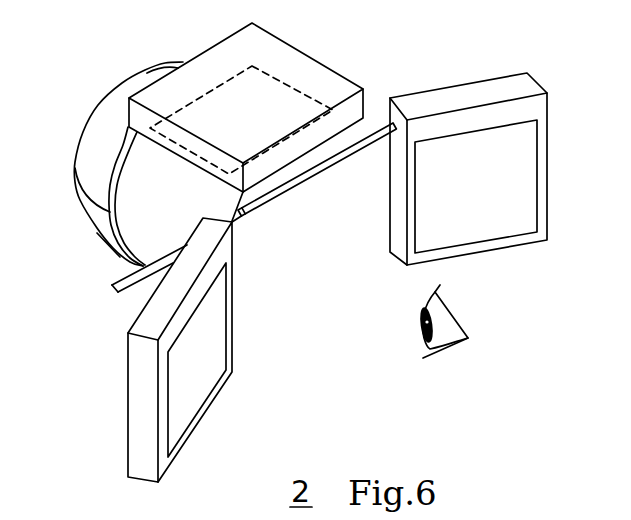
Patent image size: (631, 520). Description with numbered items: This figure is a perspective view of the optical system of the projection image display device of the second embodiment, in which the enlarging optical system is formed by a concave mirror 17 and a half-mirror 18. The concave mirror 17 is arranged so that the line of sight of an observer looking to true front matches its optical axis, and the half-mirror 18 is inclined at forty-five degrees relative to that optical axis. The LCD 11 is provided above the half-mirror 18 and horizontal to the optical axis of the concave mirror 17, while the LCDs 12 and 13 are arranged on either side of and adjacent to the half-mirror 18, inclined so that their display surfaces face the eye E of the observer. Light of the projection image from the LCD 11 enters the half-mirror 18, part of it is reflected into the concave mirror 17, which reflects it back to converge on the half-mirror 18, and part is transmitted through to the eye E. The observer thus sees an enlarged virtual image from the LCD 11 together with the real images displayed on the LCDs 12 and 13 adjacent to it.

The LCD 11 is at (285, 90).
The LCD 12 is at (202, 385).
The LCD 13 is at (515, 207).
The concave mirror 17 is at (132, 230).
The half-mirror 18 is at (312, 182).
The eye of an observer E is at (440, 350).